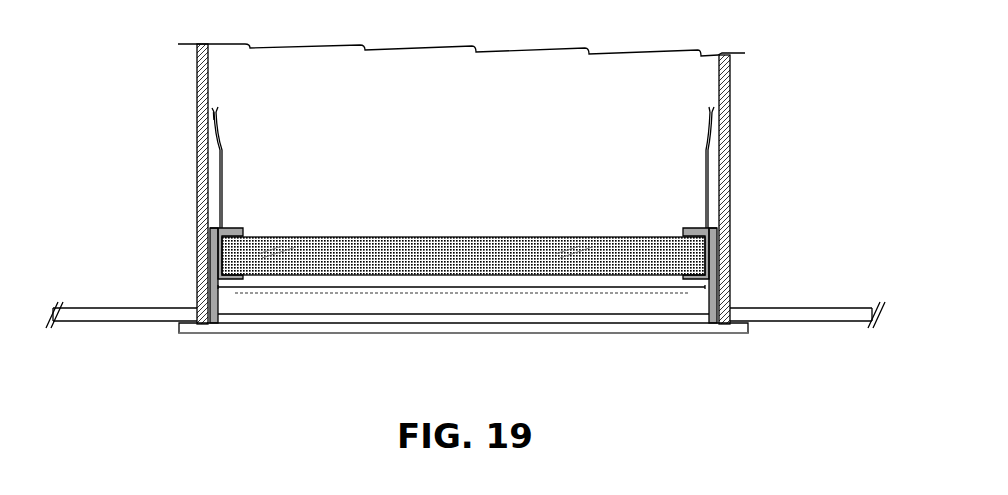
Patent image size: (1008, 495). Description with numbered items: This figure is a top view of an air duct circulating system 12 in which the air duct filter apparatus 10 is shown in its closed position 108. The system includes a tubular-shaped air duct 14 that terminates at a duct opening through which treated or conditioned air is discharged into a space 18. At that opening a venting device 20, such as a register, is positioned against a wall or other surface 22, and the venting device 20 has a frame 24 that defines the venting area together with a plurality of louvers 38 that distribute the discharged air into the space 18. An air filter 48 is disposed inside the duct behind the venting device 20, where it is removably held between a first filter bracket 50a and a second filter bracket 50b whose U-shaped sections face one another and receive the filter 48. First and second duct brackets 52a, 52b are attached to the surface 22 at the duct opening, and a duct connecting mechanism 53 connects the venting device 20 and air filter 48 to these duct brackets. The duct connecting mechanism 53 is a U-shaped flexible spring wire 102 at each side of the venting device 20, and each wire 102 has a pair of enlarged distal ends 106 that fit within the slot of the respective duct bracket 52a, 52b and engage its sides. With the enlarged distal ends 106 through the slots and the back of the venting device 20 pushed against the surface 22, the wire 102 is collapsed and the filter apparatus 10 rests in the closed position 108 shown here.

The air duct filter apparatus 10 is at (323, 357).
The air duct circulating system 12 is at (794, 113).
The air duct 14 is at (202, 152).
The space 18 is at (150, 414).
The venting device 20 is at (598, 341).
The surface 22 is at (84, 310).
The frame 24 is at (272, 329).
The louvers 38 is at (402, 306).
The air filter 48 is at (370, 255).
The first filter bracket 50a is at (249, 232).
The second filter bracket 50b is at (668, 232).
The first duct bracket 52a is at (206, 247).
The second duct bracket 52b is at (725, 257).
The duct connecting mechanism 53 is at (698, 142).
The flexible spring wire 102 is at (225, 147).
The enlarged distal ends 106 is at (232, 119).
The closed position 108 is at (737, 365).